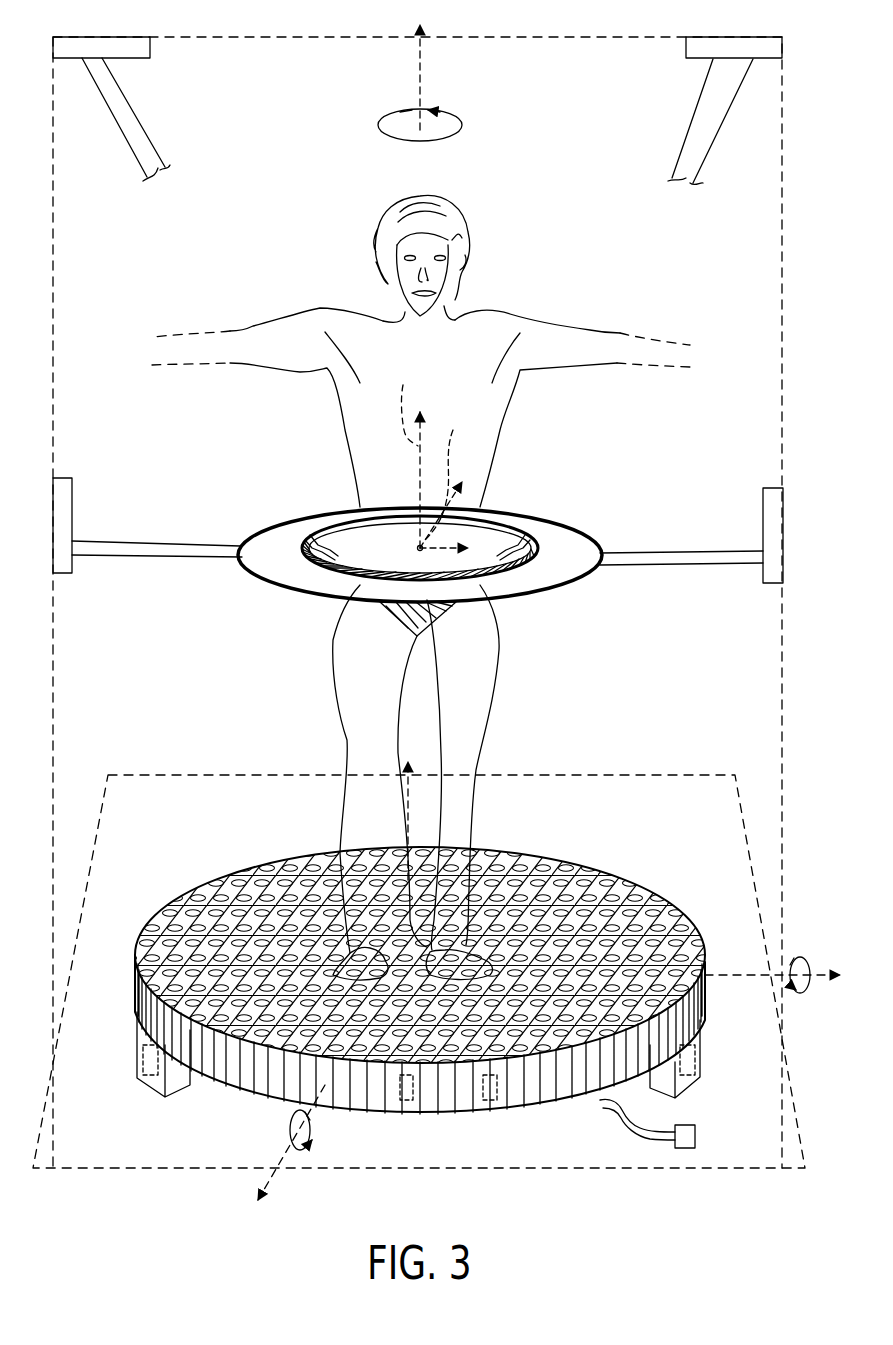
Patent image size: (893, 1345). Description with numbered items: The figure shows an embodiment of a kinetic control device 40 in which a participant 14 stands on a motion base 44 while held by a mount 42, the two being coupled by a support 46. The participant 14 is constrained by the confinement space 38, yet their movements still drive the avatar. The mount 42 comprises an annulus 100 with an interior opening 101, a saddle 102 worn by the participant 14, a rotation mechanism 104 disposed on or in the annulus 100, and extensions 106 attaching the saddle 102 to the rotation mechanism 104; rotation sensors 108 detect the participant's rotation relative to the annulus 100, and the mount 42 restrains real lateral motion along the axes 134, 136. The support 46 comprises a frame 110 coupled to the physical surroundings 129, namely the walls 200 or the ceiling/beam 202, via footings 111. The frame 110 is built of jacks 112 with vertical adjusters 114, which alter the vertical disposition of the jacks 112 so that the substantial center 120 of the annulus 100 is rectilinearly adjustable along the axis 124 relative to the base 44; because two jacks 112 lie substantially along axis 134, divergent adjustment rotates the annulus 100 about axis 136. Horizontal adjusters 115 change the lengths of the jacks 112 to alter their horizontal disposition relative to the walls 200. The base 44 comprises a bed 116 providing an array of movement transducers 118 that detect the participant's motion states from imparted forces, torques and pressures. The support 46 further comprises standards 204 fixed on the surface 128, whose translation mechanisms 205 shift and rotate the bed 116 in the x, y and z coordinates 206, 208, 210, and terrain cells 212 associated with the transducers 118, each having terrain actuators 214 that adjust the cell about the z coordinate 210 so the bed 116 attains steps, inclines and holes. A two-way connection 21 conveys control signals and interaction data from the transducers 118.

The participant 14 is at (548, 290).
The two-way connection 21 is at (645, 1138).
The confinement space 38 is at (140, 1175).
The kinetic control device 40 is at (165, 640).
The mount 42 is at (297, 607).
The motion base 44 is at (417, 976).
The support 46 is at (145, 67).
The annulus 100 is at (570, 505).
The interior opening 101 is at (345, 530).
The saddle 102 is at (395, 620).
The rotation mechanism 104 is at (305, 572).
The extensions 106 is at (308, 530).
The rotation sensors 108 is at (518, 580).
The frame 110 is at (85, 493).
The footings 111 is at (690, 57).
The jacks 112 is at (135, 155).
The vertical adjusters 114 is at (70, 60).
The horizontal adjusters 115 is at (713, 70).
The bed 116 is at (530, 858).
The movement transducers 118 is at (640, 910).
The substantial center 120 is at (412, 530).
The axis 124 is at (420, 162).
The surface 128 is at (778, 1130).
The physical surroundings 129 is at (548, 48).
The axis 134 is at (415, 548).
The axis 136 is at (448, 467).
The walls 200 is at (53, 400).
The ceiling/beam 202 is at (263, 48).
The standards 204 is at (137, 1090).
The translation mechanisms 205 is at (143, 1052).
The x coordinate 206 is at (822, 990).
The y coordinate 208 is at (270, 1185).
The z coordinate 210 is at (406, 812).
The terrain cells 212 is at (400, 1105).
The terrain actuators 214 is at (408, 1102).